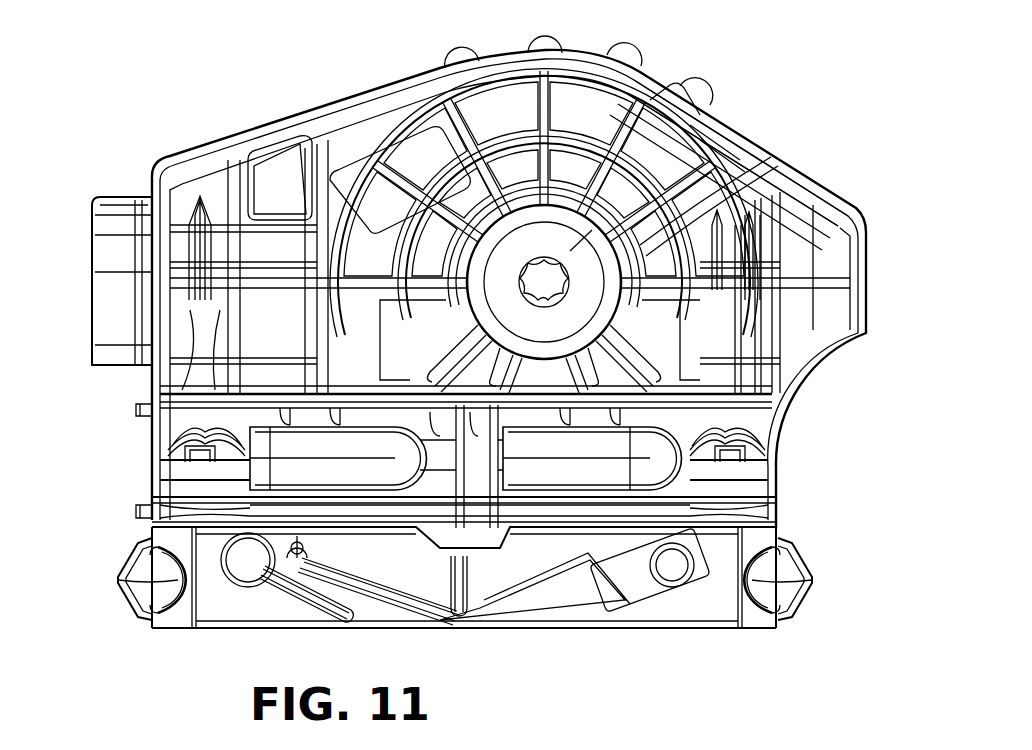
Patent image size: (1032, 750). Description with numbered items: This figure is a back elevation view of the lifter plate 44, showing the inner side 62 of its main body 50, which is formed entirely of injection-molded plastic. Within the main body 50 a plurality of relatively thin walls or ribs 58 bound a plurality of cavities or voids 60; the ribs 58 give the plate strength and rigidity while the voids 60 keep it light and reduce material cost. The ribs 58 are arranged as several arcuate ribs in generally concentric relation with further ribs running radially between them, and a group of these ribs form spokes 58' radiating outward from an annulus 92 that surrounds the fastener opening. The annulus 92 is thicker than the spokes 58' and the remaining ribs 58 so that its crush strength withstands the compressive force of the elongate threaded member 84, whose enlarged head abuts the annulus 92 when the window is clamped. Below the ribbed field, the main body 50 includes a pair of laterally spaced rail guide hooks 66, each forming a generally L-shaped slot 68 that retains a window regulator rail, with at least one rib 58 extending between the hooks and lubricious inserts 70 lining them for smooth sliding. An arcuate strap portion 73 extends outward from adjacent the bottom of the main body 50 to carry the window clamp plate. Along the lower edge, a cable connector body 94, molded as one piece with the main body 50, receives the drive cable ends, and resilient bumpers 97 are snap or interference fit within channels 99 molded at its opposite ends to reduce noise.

The lifter plate 44 is at (712, 48).
The main body 50 is at (275, 118).
The ribs 58 is at (479, 342).
The spokes 58' is at (805, 227).
The voids 60 is at (280, 238).
The inner side 62 is at (662, 96).
The rail guide hooks 66 is at (158, 442).
The L-shaped slot 68 is at (148, 490).
The lubricious inserts 70 is at (150, 468).
The arcuate strap portion 73 is at (92, 245).
The elongate male threaded member 84 is at (771, 157).
The annulus 92 is at (720, 140).
The cable connector body 94 is at (148, 632).
The resilient bumpers 97 is at (130, 560).
The channels 99 is at (178, 580).